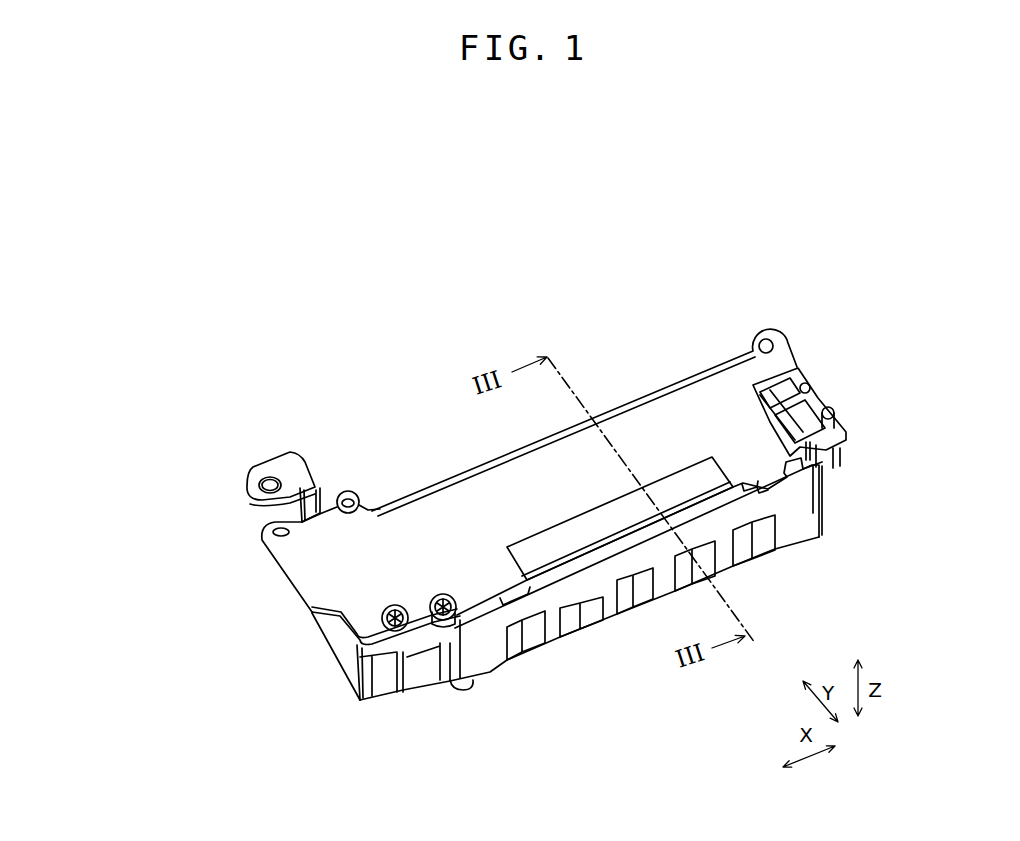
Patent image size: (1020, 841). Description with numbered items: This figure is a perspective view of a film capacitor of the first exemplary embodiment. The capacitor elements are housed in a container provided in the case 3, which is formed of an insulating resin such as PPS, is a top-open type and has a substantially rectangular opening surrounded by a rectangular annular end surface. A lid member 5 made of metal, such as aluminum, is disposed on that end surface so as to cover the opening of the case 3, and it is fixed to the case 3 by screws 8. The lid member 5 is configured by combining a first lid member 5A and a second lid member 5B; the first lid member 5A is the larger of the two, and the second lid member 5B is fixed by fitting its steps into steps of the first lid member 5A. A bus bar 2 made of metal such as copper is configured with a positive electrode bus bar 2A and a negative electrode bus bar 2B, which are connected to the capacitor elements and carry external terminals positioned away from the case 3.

The bus bar 2 is at (103, 457).
The positive electrode bus bar 2A is at (250, 487).
The negative electrode bus bar 2B is at (262, 532).
The case 3 is at (335, 651).
The lid member 5 is at (695, 206).
The first lid member 5A is at (650, 437).
The second lid member 5B is at (685, 493).
The screws 8 is at (441, 594).